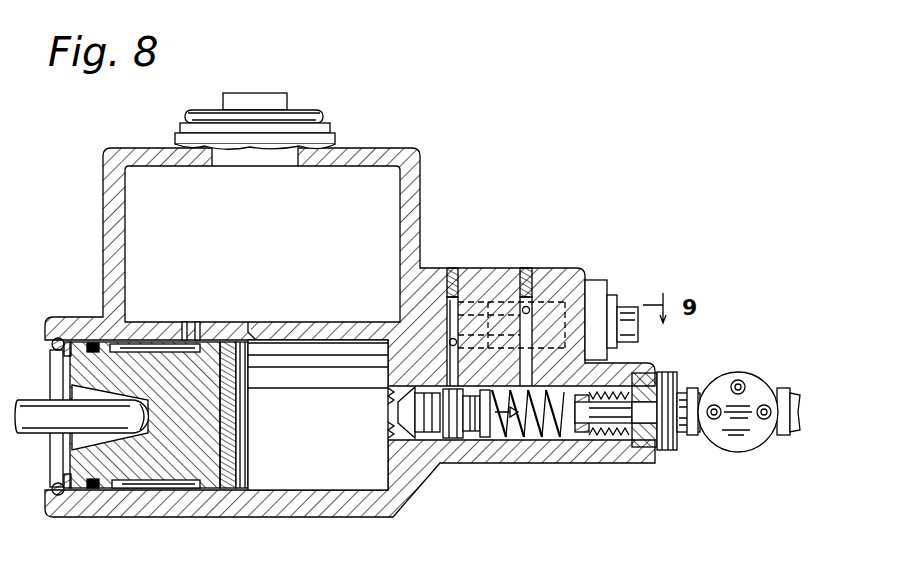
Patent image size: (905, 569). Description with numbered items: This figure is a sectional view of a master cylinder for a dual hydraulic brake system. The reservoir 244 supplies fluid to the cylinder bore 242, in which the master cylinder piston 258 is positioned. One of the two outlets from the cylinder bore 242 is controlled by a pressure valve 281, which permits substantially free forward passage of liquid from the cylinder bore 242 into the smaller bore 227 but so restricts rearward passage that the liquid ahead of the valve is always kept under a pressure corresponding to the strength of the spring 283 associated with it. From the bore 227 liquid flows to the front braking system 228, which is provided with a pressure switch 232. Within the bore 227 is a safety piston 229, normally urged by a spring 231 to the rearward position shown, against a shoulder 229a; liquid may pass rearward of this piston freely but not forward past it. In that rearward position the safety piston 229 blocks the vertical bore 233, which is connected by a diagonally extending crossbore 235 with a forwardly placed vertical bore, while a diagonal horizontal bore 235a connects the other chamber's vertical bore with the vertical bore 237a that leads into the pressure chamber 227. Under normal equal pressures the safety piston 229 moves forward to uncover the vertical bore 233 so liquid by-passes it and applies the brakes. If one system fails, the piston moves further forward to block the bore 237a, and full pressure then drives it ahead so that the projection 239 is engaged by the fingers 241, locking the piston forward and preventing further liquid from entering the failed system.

The reservoir 244 is at (374, 197).
The vertical bore 233 is at (452, 308).
The diagonally extending crossbore 235 is at (452, 340).
The diagonal horizontal bore 235a is at (524, 306).
The vertical bore 237a is at (528, 326).
The front braking system 228 is at (795, 393).
The pressure switch 232 is at (748, 432).
The master cylinder piston 258 is at (168, 453).
The cylinder bore 242 is at (292, 460).
The pressure valve 281 is at (387, 420).
The spring 283 is at (403, 464).
The shoulder 229a is at (441, 456).
The safety piston 229 is at (483, 442).
The projection 239 is at (537, 432).
The bore 227 is at (547, 430).
The spring 231 is at (577, 433).
The fingers 241 is at (588, 432).